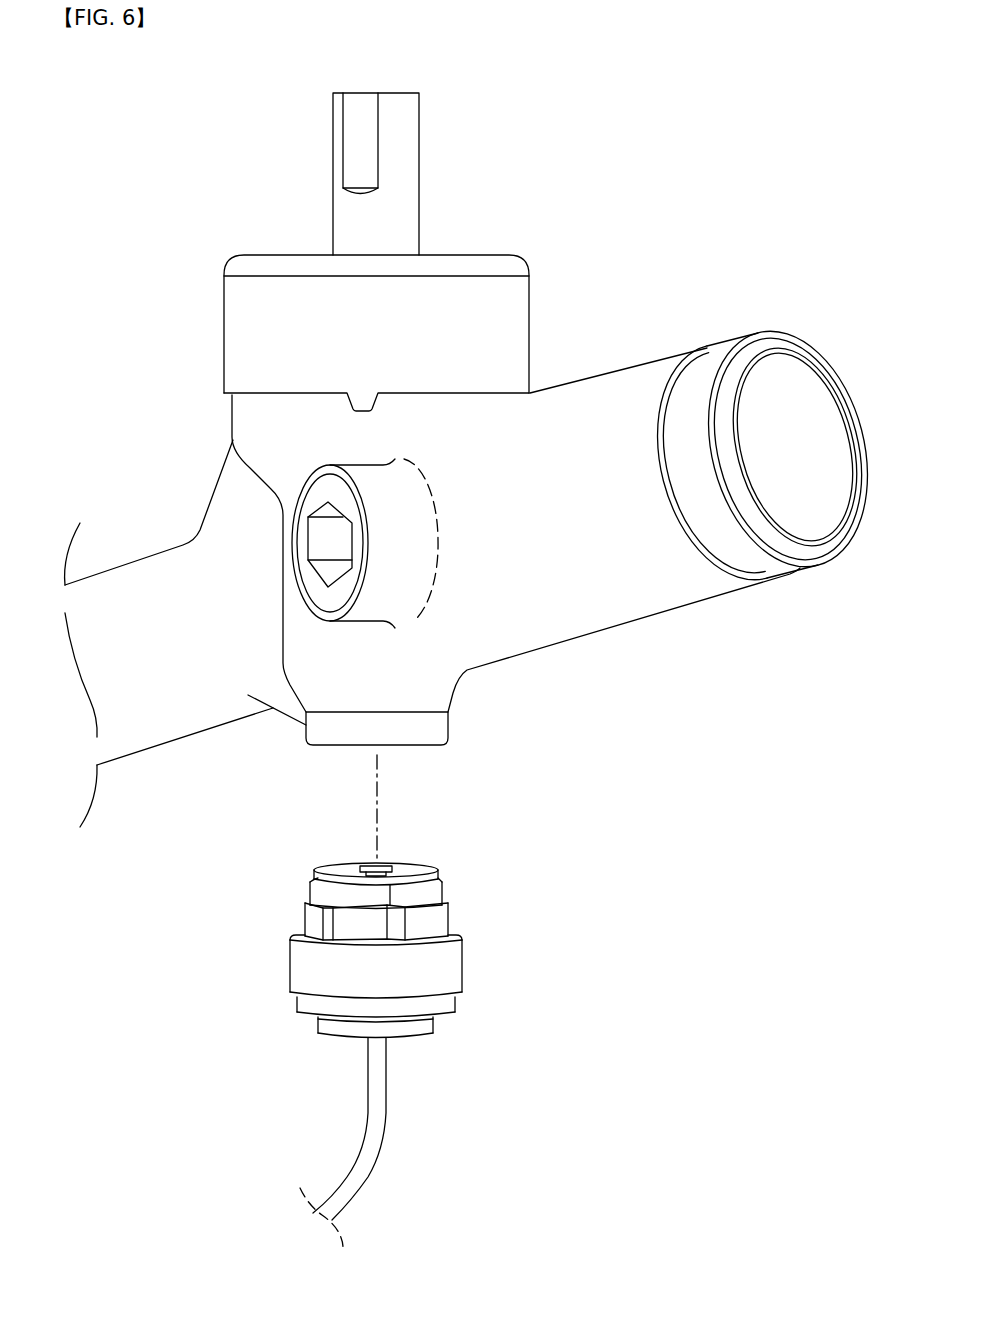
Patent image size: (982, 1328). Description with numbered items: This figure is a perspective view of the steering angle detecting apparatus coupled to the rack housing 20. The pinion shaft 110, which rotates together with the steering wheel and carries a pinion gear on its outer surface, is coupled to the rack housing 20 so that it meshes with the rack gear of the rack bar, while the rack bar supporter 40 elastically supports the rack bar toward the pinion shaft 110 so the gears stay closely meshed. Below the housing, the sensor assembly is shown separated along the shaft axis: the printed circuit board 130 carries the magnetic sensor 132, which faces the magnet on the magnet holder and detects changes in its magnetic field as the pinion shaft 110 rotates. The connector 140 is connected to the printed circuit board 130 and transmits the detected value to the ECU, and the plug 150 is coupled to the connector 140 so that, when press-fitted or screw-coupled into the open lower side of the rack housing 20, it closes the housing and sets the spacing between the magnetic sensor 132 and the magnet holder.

The pinion shaft 110 is at (413, 140).
The rack housing 20 is at (130, 583).
The rack bar supporter 40 is at (313, 588).
The printed circuit board 130 is at (422, 870).
The magnetic sensor 132 is at (378, 863).
The connector 140 is at (437, 893).
The plug 150 is at (450, 967).